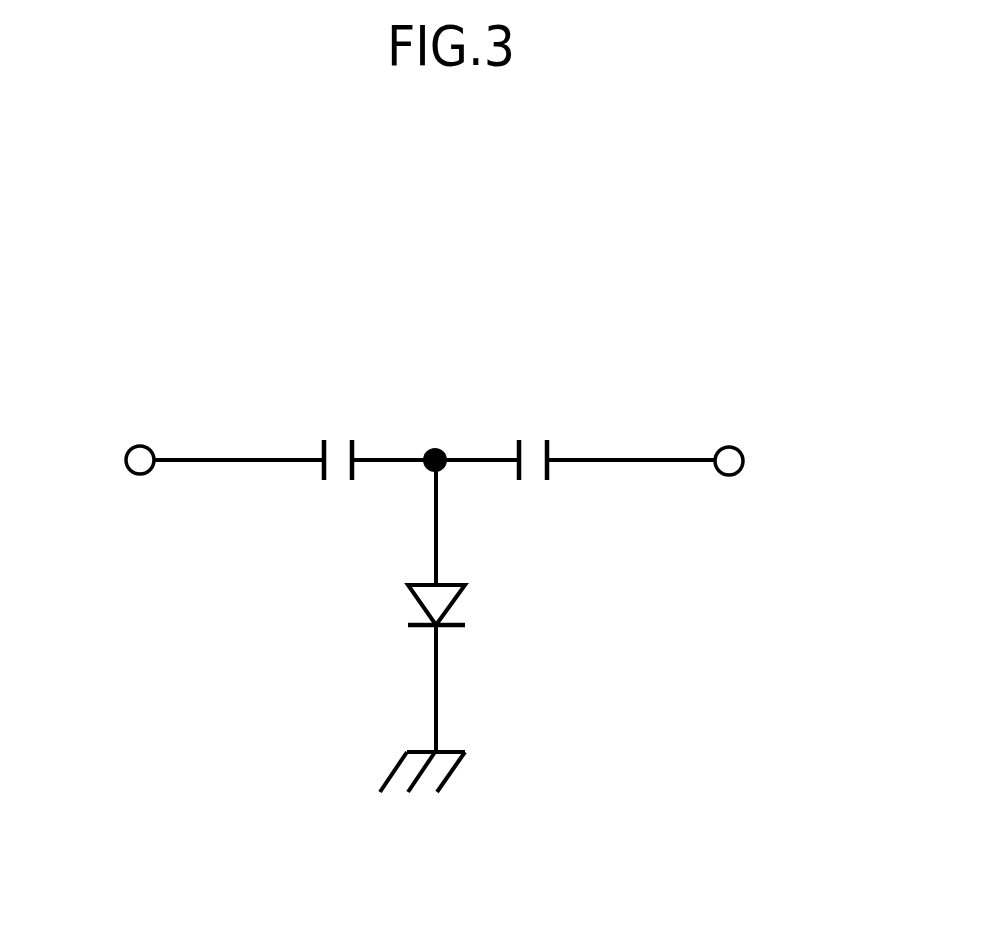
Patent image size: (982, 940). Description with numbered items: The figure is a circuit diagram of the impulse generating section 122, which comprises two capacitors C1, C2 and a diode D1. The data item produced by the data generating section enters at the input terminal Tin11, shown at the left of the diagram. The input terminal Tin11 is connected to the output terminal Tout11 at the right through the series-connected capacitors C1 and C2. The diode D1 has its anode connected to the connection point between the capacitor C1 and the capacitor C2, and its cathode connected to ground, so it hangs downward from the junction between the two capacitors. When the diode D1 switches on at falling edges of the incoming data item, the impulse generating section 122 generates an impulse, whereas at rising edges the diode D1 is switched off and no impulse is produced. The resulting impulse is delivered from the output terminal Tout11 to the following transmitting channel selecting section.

The impulse generating section 122 is at (120, 217).
The input terminal Tin11 is at (138, 458).
The output terminal Tout11 is at (729, 461).
The capacitor C1 is at (337, 437).
The capacitor C2 is at (532, 437).
The diode D1 is at (466, 611).